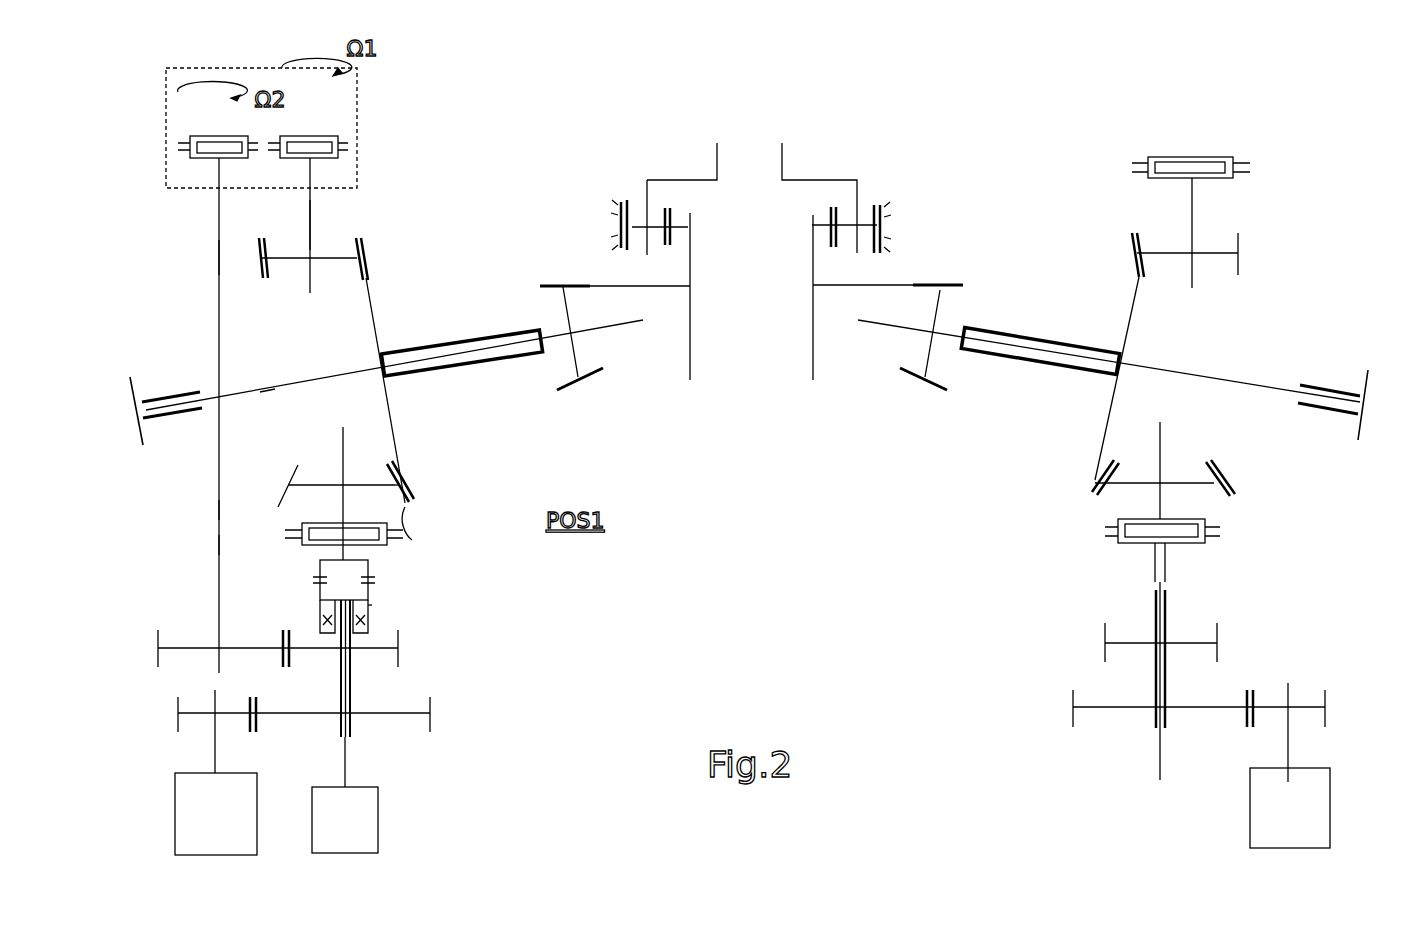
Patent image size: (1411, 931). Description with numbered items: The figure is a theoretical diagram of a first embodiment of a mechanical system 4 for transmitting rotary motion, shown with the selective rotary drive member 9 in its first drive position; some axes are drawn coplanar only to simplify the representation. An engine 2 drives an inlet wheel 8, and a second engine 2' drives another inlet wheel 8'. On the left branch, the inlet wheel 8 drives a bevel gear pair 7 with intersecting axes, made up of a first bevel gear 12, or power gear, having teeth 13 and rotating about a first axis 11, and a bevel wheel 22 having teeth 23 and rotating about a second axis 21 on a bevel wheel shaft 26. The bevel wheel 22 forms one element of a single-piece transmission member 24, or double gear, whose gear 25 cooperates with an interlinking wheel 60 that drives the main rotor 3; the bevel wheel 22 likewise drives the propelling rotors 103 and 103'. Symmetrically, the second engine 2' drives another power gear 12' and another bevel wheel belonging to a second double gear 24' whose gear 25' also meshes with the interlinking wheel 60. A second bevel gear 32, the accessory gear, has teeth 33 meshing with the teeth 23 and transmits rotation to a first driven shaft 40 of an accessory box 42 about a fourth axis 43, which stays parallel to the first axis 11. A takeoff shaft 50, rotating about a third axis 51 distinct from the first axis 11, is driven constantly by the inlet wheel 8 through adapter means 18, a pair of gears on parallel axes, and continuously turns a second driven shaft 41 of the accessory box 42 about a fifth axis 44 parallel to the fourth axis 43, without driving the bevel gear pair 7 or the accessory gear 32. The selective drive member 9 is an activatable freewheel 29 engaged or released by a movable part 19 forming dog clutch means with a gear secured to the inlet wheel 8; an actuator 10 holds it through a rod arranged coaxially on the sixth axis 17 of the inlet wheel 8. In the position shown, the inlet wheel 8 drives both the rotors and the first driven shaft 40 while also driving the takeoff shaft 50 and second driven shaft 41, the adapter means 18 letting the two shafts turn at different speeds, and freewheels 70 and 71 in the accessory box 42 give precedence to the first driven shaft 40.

The engine 2 is at (178, 774).
The engine 2' is at (1325, 765).
The rotor 3 is at (787, 160).
The mechanical system 4 is at (910, 155).
The bevel gear pair 7 is at (420, 517).
The inlet wheel 8 is at (336, 724).
The inlet wheel 8' is at (1194, 751).
The selective rotary drive member 9 is at (413, 605).
The actuator 10 is at (378, 823).
The first axis 11 is at (327, 443).
The first bevel gear 12 is at (344, 469).
The power gear 12' is at (1195, 482).
The teeth 13 is at (412, 540).
The sixth axis of rotation 17 is at (353, 737).
The adapter means 18 is at (284, 610).
The movable part 19 is at (368, 613).
The second axis 21 is at (268, 380).
The bevel wheel 22 is at (423, 390).
The teeth 23 is at (367, 252).
The single-piece transmission member 24 is at (461, 312).
The second double gear 24' is at (1040, 306).
The gear 25 is at (628, 290).
The gear 25' is at (872, 367).
The bevel wheel shaft 26 is at (267, 395).
The freewheel 29 is at (373, 547).
The second bevel gear 32 is at (288, 263).
The teeth 33 is at (347, 272).
The first driven shaft 40 is at (309, 222).
The second driven shaft 41 is at (219, 283).
The accessory box 42 is at (357, 100).
The fourth axis of rotation 43 is at (312, 232).
The fifth axis of rotation 44 is at (216, 258).
The takeoff shaft 50 is at (219, 510).
The third axis of rotation 51 is at (216, 544).
The interlinking wheel 60 is at (877, 283).
The freewheel 70 is at (338, 158).
The freewheel 71 is at (178, 158).
The rotor 103 is at (134, 436).
The rotor 103' is at (1327, 364).